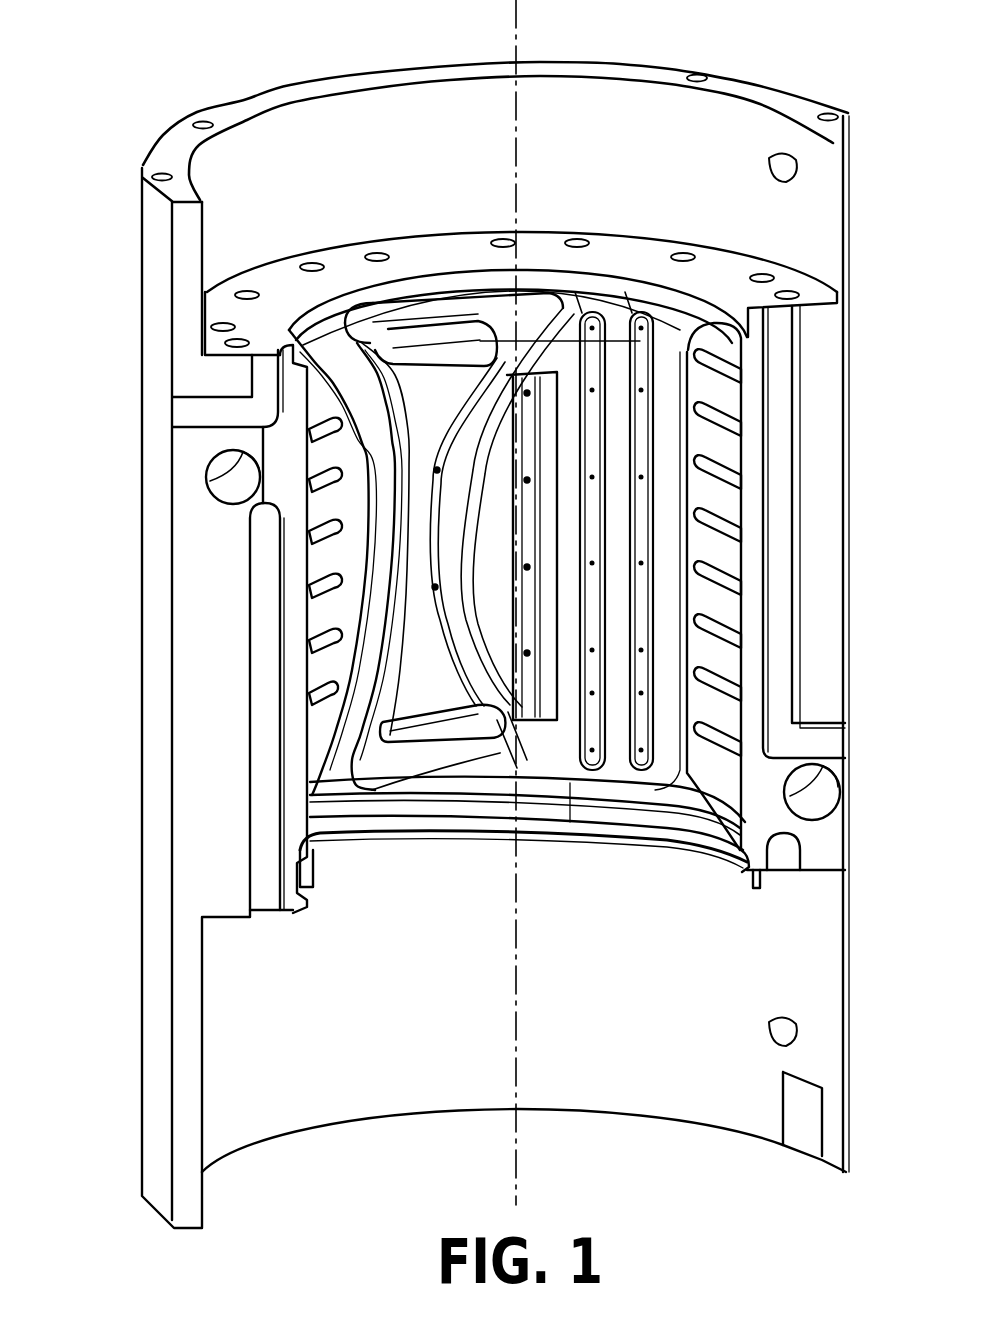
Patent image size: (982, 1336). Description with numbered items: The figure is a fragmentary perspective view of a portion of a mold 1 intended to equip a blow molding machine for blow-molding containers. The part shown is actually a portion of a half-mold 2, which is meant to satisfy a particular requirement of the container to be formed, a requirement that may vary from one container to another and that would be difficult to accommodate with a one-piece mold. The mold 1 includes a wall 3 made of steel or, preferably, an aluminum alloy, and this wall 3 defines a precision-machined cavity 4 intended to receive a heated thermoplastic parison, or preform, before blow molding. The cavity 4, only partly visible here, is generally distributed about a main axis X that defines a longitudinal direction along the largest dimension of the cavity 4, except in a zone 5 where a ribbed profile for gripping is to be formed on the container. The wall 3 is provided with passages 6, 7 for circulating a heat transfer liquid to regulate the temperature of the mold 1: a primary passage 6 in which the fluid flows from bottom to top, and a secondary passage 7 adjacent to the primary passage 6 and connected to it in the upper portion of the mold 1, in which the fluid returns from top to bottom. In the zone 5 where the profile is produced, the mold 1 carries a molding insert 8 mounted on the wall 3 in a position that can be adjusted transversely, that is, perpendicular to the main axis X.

The mold 1 is at (145, 245).
The half-mold 2 is at (145, 245).
The wall 3 is at (193, 740).
The cavity 4 is at (641, 860).
The zone 5 is at (605, 320).
The primary passage 6 is at (378, 250).
The secondary passage 7 is at (508, 238).
The molding insert 8 is at (397, 753).
The main axis X is at (516, 960).